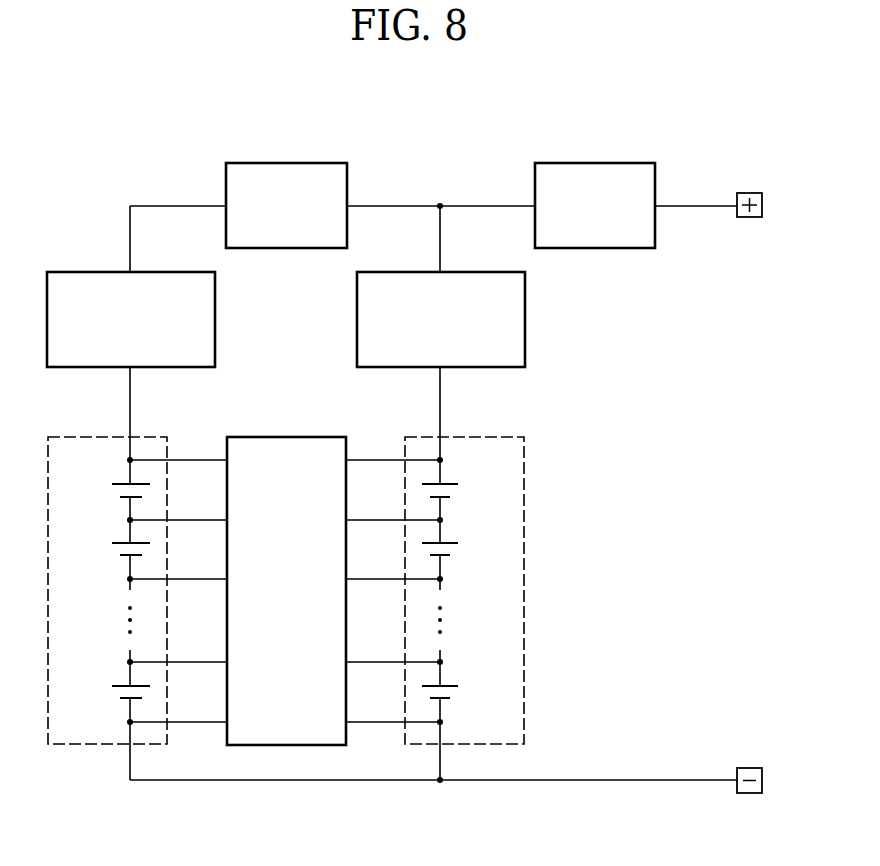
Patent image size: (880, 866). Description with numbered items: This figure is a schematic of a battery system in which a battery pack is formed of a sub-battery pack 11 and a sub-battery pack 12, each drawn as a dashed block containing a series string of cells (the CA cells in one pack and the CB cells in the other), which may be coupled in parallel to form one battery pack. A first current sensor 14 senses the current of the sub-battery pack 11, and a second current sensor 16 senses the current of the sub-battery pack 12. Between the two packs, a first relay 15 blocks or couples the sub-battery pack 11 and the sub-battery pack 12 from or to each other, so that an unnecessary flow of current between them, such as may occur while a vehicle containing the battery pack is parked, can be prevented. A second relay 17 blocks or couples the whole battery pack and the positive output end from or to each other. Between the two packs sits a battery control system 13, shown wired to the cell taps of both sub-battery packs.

The sub-battery pack 11 is at (70, 437).
The sub-battery pack 12 is at (483, 437).
The battery control system 13 is at (288, 437).
The first current sensor 14 is at (215, 322).
The first relay 15 is at (286, 163).
The second current sensor 16 is at (525, 322).
The second relay 17 is at (595, 163).